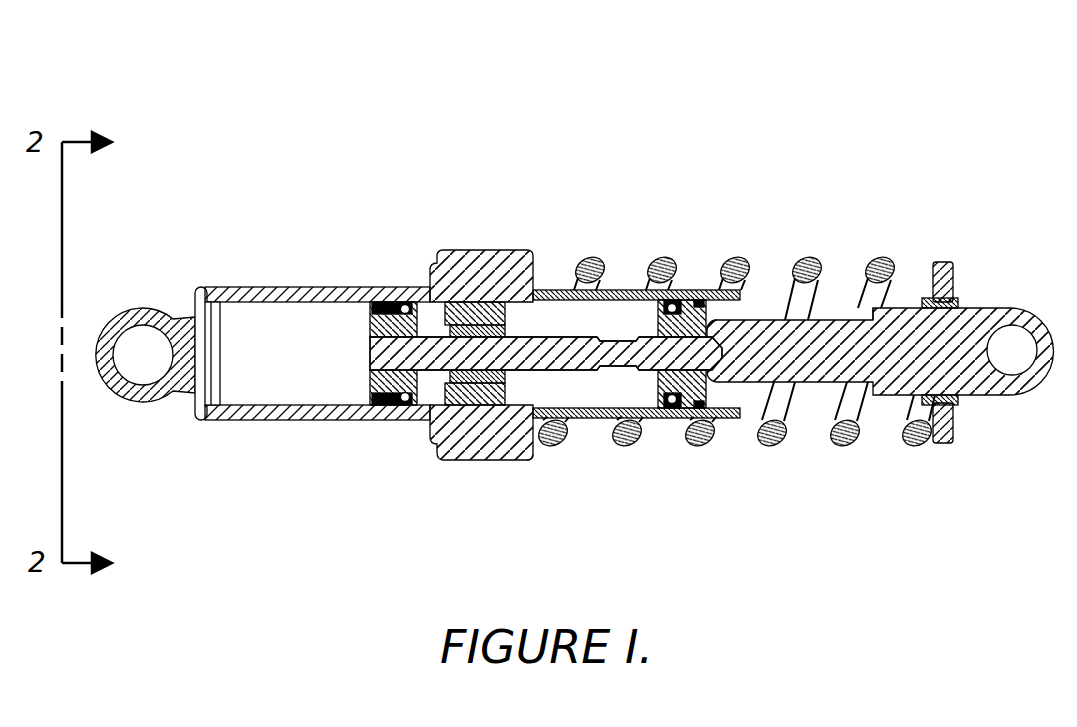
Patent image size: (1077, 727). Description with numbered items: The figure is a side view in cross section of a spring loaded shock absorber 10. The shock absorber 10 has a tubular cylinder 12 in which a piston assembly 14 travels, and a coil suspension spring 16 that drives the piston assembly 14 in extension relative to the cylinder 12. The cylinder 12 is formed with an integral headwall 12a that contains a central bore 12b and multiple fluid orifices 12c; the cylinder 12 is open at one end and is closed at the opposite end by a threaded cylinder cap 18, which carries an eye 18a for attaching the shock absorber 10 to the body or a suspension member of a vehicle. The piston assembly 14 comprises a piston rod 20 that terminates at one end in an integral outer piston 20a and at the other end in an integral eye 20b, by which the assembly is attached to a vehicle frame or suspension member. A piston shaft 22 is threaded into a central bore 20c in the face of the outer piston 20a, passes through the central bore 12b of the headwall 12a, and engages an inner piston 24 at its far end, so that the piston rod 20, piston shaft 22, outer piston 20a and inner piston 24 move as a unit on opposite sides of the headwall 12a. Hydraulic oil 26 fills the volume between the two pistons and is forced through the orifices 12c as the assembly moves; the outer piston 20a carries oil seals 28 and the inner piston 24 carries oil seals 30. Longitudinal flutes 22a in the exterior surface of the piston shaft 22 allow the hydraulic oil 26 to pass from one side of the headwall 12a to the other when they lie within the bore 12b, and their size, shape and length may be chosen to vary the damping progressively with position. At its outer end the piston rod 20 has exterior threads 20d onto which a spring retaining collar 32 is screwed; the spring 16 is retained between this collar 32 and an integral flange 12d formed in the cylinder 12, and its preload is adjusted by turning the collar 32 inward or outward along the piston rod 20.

The shock absorber 10 is at (314, 208).
The tubular cylinder 12 is at (467, 358).
The headwall 12a is at (410, 292).
The central bore 12b is at (437, 250).
The fluid orifices 12c is at (490, 292).
The integral flange 12d is at (538, 455).
The piston assembly 14 is at (836, 308).
The coil suspension spring 16 is at (882, 260).
The threaded cylinder cap 18 is at (138, 309).
The eye 18a is at (126, 352).
The piston rod 20 is at (830, 345).
The outer piston 20a is at (640, 290).
The eye 20b is at (1014, 342).
The central bore 20c is at (708, 290).
The exterior threads 20d is at (950, 408).
The piston shaft 22 is at (546, 363).
The longitudinal flutes 22a is at (548, 292).
The inner piston 24 is at (370, 385).
The hydraulic oil 26 is at (588, 324).
The oil seals 28 is at (688, 408).
The oil seals 30 is at (400, 407).
The spring retaining collar 32 is at (945, 262).